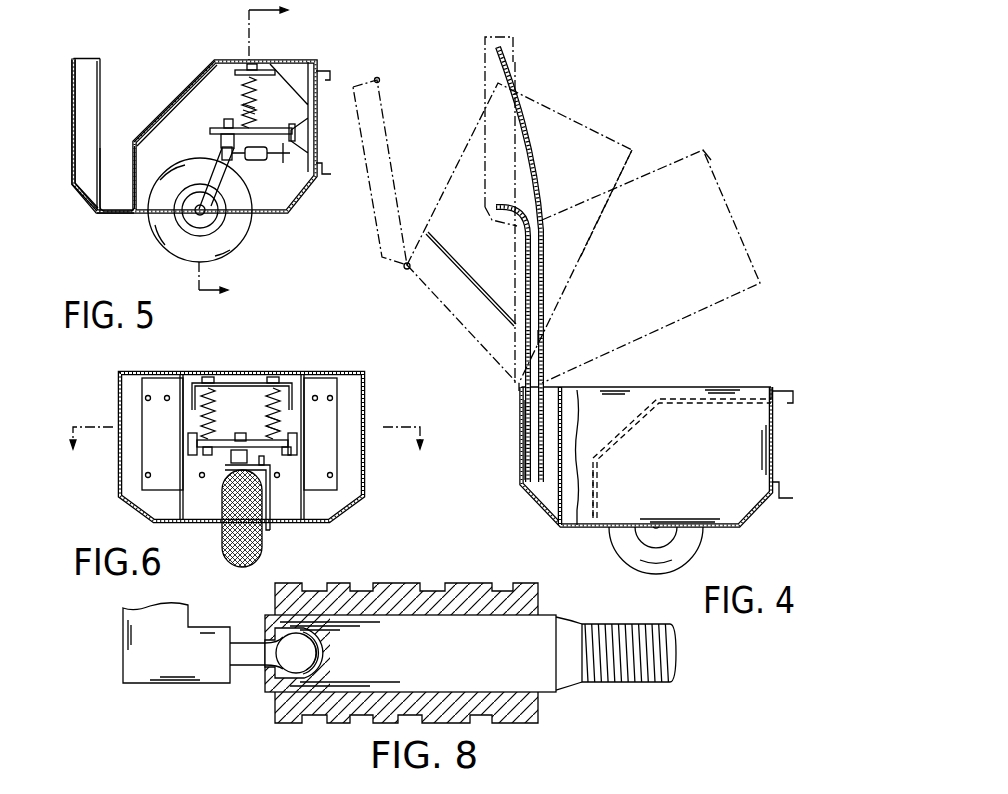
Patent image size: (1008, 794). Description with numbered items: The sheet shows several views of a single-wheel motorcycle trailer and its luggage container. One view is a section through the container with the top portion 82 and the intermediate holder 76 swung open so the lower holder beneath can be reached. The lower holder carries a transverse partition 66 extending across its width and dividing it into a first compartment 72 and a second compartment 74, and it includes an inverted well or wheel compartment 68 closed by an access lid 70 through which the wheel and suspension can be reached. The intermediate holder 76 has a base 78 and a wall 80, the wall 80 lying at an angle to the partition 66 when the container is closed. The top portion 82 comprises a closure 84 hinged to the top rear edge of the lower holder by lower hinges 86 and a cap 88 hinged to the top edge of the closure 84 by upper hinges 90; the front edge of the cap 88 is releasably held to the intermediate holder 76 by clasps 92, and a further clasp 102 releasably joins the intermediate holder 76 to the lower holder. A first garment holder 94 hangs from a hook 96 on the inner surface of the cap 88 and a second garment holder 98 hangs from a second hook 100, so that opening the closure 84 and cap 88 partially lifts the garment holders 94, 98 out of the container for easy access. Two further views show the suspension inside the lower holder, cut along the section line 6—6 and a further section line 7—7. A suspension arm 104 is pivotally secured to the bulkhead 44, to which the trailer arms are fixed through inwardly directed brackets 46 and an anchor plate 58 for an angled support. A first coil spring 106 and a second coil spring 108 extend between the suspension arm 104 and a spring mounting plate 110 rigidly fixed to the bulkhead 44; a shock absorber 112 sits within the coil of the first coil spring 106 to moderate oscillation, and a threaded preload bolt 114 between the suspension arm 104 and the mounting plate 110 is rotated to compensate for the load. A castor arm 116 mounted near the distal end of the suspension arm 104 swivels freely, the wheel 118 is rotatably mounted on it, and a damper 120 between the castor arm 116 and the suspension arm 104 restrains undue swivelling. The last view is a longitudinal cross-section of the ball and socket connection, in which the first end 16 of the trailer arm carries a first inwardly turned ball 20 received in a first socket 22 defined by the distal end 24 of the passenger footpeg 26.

In FIG. 5, the section line 6— 6 is at (250, 153).
In FIG. 6, the section line 7- 7 is at (246, 448).
In FIG. 8, the first end 16 is at (198, 640).
In FIG. 8, the first inwardly turned ball 20 is at (290, 655).
In FIG. 8, the first socket 22 is at (310, 600).
In FIG. 8, the distal end 24 is at (425, 600).
In FIG. 8, the passenger footpeg 26 is at (567, 668).
In FIG. 5, the bulkhead 44 is at (307, 153).
In FIG. 6, the bulkhead 44 is at (330, 425).
In FIG. 5, the bracket 46 is at (317, 176).
In FIG. 4, the bracket 46 is at (780, 500).
In FIG. 5, the anchor plate 58 is at (325, 75).
In FIG. 4, the anchor plate 58 is at (782, 396).
In FIG. 5, the transverse partition 66 is at (105, 78).
In FIG. 4, the transverse partition 66 is at (578, 405).
In FIG. 5, the wheel compartment 68 is at (132, 170).
In FIG. 4, the wheel compartment 68 is at (600, 498).
In FIG. 5, the access lid 70 is at (173, 97).
In FIG. 4, the access lid 70 is at (622, 435).
In FIG. 5, the first compartment 72 is at (88, 67).
In FIG. 4, the first compartment 72 is at (542, 498).
In FIG. 5, the second compartment 74 is at (118, 203).
In FIG. 4, the second compartment 74 is at (572, 522).
In FIG. 4, the intermediate holder 76 is at (562, 130).
In FIG. 4, the base 78 is at (623, 170).
In FIG. 4, the wall 80 is at (462, 273).
In FIG. 4, the top portion 82 is at (400, 142).
In FIG. 4, the closure 84 is at (476, 340).
In FIG. 4, the lower hinges 86 is at (518, 387).
In FIG. 4, the cap 88 is at (372, 190).
In FIG. 4, the upper hinges 90 is at (407, 268).
In FIG. 4, the clasps 92 is at (377, 80).
In FIG. 4, the first garment holder 94 is at (545, 333).
In FIG. 4, the hook 96 is at (503, 205).
In FIG. 4, the second garment holder 98 is at (537, 190).
In FIG. 4, the second hook 100 is at (500, 50).
In FIG. 4, the clasp 102 is at (772, 386).
In FIG. 5, the suspension arm 104 is at (210, 130).
In FIG. 6, the suspension arm 104 is at (225, 452).
In FIG. 6, the first coil spring 106 is at (243, 392).
In FIG. 5, the second coil spring 108 is at (243, 108).
In FIG. 6, the second coil spring 108 is at (285, 425).
In FIG. 5, the spring mounting plate 110 is at (253, 73).
In FIG. 6, the spring mounting plate 110 is at (238, 380).
In FIG. 6, the shock absorber 112 is at (203, 423).
In FIG. 5, the threaded preload bolt 114 is at (253, 95).
In FIG. 6, the threaded preload bolt 114 is at (307, 380).
In FIG. 5, the castor arm 116 is at (230, 197).
In FIG. 6, the castor arm 116 is at (270, 503).
In FIG. 5, the wheel 118 is at (153, 240).
In FIG. 6, the wheel 118 is at (222, 535).
In FIG. 4, the wheel 118 is at (700, 533).
In FIG. 5, the damper 120 is at (253, 162).
In FIG. 6, the damper 120 is at (270, 463).